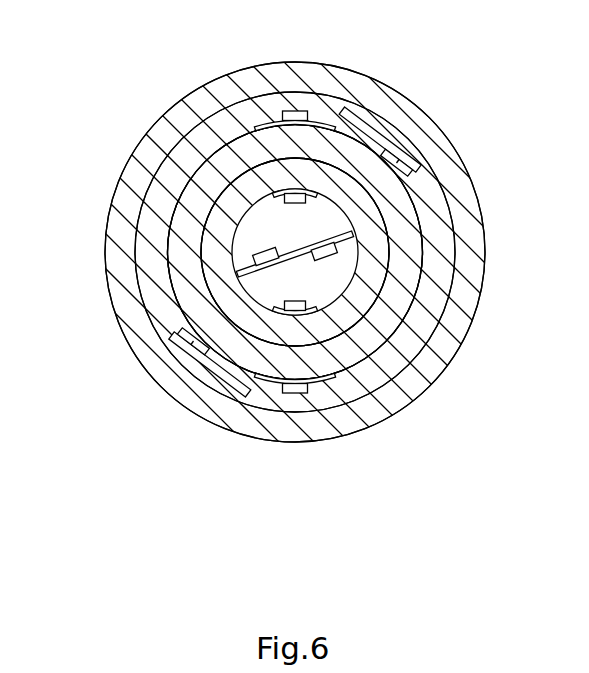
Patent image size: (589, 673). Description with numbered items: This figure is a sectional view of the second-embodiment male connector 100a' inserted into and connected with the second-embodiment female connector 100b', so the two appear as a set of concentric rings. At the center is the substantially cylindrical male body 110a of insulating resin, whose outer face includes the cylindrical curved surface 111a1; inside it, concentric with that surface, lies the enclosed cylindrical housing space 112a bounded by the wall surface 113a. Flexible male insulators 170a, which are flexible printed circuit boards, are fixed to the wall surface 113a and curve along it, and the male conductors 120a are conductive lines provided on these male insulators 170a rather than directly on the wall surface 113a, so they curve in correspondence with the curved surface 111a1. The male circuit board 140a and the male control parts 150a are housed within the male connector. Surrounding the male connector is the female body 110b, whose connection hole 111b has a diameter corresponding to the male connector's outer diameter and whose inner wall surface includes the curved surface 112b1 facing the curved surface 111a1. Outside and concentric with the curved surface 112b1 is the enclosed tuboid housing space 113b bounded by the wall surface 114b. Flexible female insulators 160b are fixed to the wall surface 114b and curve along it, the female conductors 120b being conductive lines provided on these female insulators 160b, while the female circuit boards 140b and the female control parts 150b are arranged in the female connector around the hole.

The male connector 100a' is at (207, 252).
The female connector 100b' is at (306, 237).
The male body 110a is at (212, 243).
The female body 110b is at (372, 310).
The curved surface 111a1 is at (233, 258).
The connection hole 111b is at (410, 208).
The housing space 112a is at (245, 170).
The curved surface 112b1 is at (396, 180).
The wall surface 113a is at (396, 297).
The housing space 113b is at (437, 237).
The wall surface 114b is at (447, 268).
The male conductors 120a is at (268, 222).
The female conductors 120b is at (294, 117).
The male circuit board 140a is at (271, 315).
The female circuit boards 140b is at (356, 112).
The male control parts 150a is at (258, 246).
The female control parts 150b is at (414, 158).
The female insulators 160b is at (256, 126).
The male insulators 170a is at (294, 198).